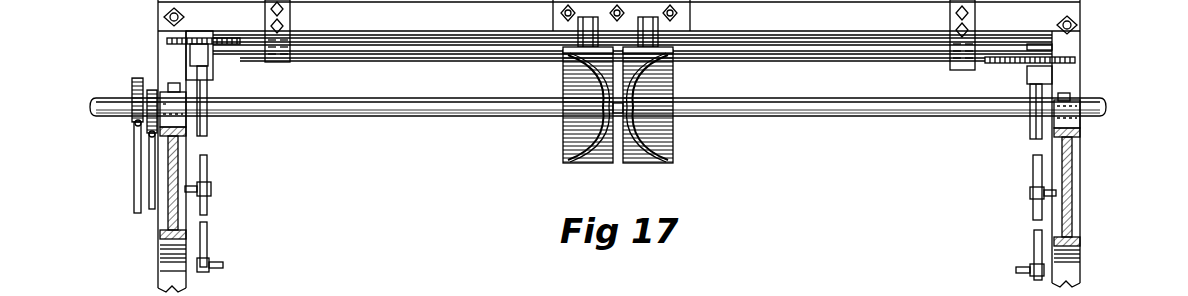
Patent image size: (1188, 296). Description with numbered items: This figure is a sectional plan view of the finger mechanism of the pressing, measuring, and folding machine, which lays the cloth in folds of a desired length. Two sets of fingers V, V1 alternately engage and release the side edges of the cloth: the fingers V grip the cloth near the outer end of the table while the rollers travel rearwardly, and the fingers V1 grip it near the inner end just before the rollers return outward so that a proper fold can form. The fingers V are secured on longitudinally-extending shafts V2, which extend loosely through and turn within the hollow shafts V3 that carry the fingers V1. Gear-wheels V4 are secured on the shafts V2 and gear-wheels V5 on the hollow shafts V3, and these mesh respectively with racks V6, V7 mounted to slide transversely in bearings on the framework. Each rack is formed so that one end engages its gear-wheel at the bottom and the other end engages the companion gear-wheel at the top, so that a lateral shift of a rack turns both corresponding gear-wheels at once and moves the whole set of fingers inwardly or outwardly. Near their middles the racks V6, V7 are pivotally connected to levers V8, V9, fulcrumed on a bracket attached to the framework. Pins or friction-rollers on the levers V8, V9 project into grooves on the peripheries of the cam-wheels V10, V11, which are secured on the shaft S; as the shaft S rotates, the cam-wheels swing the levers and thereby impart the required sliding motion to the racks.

The shaft S is at (388, 107).
The fingers V is at (213, 267).
The fingers V1 is at (205, 187).
The longitudinally-extending shafts V2 is at (207, 236).
The hollow shafts V3 is at (207, 157).
The gear-wheels V4 is at (195, 43).
The gear-wheels V5 is at (211, 60).
The racks V6 is at (368, 17).
The racks V7 is at (398, 60).
The levers V8 is at (152, 204).
The levers V9 is at (150, 122).
The cam-wheel V10 is at (657, 88).
The cam-wheel V11 is at (567, 82).